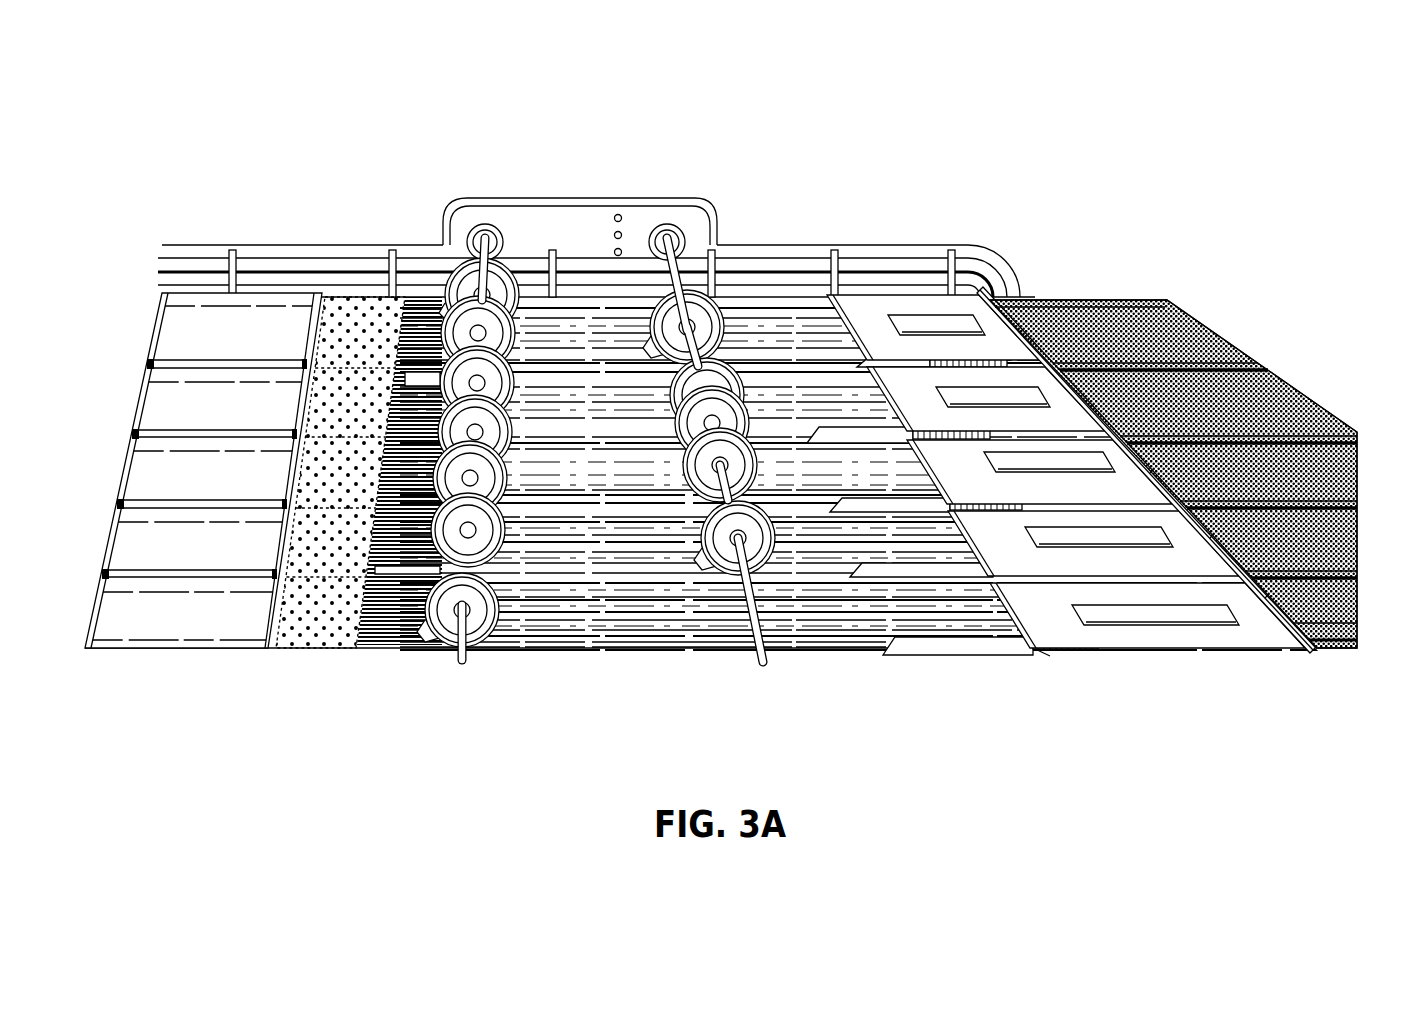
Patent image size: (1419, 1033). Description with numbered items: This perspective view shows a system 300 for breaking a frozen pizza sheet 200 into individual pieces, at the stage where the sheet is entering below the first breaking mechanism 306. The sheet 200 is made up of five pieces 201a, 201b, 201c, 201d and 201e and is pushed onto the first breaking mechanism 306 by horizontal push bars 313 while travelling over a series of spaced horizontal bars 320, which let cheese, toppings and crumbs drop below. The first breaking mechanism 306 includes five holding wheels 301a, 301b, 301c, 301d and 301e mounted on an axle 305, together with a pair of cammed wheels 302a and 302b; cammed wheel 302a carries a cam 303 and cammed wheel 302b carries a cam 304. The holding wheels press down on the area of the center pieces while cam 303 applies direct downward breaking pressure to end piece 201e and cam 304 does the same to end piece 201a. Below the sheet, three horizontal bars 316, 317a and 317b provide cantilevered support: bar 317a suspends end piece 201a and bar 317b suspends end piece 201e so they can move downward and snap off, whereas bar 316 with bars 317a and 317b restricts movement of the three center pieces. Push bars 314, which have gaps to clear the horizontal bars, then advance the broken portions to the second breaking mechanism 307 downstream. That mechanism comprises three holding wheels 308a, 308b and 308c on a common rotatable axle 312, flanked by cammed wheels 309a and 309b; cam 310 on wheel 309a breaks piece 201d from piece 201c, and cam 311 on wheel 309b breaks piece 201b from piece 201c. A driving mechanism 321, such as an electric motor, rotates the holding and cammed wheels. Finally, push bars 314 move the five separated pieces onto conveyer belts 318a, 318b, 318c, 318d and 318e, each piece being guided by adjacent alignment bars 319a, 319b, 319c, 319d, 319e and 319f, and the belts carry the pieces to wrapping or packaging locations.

The frozen pizza sheet 200 is at (282, 656).
The pizza piece 201a is at (340, 342).
The pizza piece 201b is at (330, 409).
The pizza piece 201c is at (320, 477).
The pizza piece 201d is at (310, 549).
The pizza piece 201e is at (300, 620).
The system 300 is at (907, 200).
The holding wheel 301a is at (517, 337).
The holding wheel 301b is at (512, 382).
The holding wheel 301c is at (507, 417).
The holding wheel 301d is at (505, 498).
The holding wheel 301e is at (490, 530).
The cammed wheel 302a is at (463, 621).
The cammed wheel 302b is at (513, 302).
The cam 303 is at (427, 642).
The cam 304 is at (433, 337).
The axle 305 is at (464, 662).
The first breaking mechanism 306 is at (516, 262).
The second breaking mechanism 307 is at (695, 258).
The holding wheel 308a is at (730, 382).
The holding wheel 308b is at (728, 412).
The holding wheel 308c is at (752, 465).
The cammed wheel 309a is at (733, 545).
The cammed wheel 309b is at (722, 323).
The cam 310 is at (698, 570).
The cam 311 is at (634, 390).
The rotatable axle 312 is at (770, 661).
The horizontal push bars 313 is at (312, 338).
The push bars 314 is at (742, 616).
The horizontal bar 316 is at (625, 480).
The horizontal bar 317a is at (419, 382).
The horizontal bar 317b is at (398, 576).
The conveyer belt 318a is at (1096, 343).
The conveyer belt 318b is at (1170, 411).
The conveyer belt 318c is at (1227, 486).
The conveyer belt 318d is at (1268, 554).
The conveyer belt 318e is at (1308, 623).
The alignment bar 319a is at (920, 290).
The alignment bar 319b is at (1010, 358).
The alignment bar 319c is at (1070, 435).
The alignment bar 319d is at (1082, 497).
The alignment bar 319e is at (1148, 567).
The alignment bar 319f is at (1235, 640).
The spaced horizontal bars 320 is at (785, 300).
The driving mechanism 321 is at (633, 236).